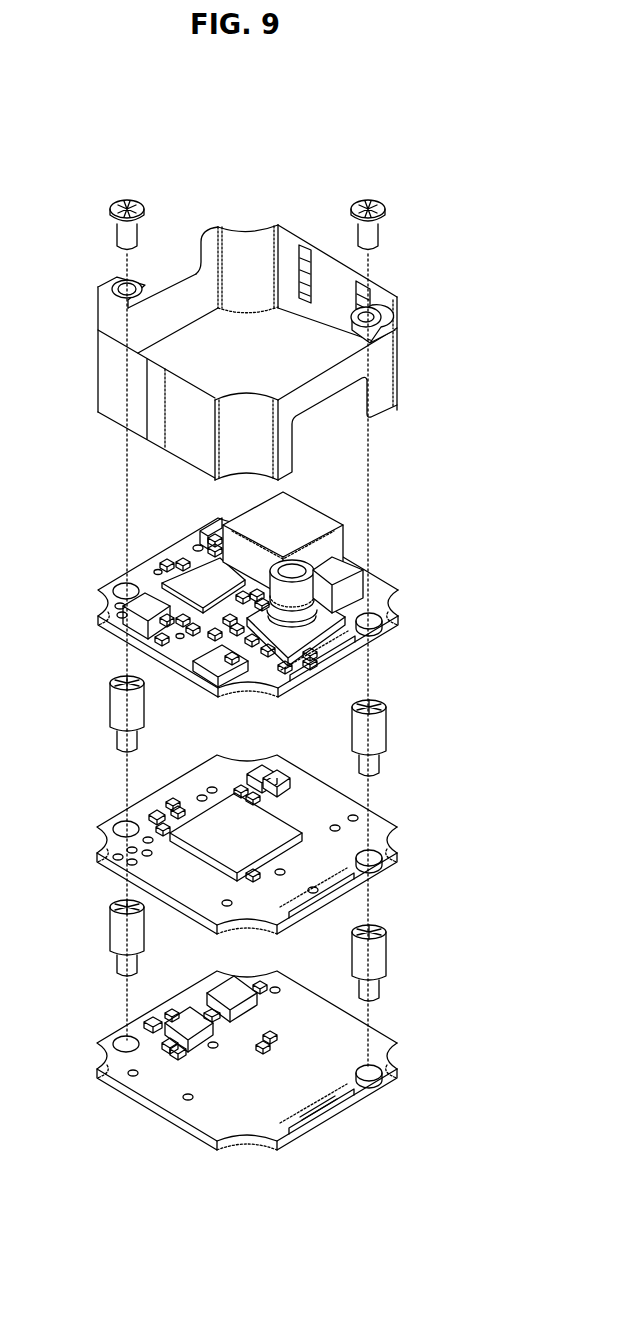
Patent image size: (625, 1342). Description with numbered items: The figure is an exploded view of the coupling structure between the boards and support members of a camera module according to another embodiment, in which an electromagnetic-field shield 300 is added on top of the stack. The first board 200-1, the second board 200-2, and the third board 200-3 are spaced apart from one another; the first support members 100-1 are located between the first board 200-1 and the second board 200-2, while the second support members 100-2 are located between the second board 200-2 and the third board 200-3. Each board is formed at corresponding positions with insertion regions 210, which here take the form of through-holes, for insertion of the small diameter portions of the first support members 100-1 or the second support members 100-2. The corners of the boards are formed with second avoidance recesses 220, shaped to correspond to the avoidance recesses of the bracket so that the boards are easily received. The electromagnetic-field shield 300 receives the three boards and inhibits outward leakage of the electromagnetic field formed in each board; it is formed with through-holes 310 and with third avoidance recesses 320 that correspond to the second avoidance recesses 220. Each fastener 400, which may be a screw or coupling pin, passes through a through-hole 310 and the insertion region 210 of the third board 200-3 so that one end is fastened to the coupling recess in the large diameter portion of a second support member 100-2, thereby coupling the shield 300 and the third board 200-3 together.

The fastener 400 is at (122, 198).
The through-hole 310 is at (113, 279).
The electromagnetic-field shield 300 is at (263, 352).
The third avoidance recess 320 is at (255, 445).
The third board 200-3 is at (386, 583).
The second board 200-2 is at (386, 818).
The first board 200-1 is at (384, 1038).
The insertion region 210 is at (115, 587).
The second avoidance recess 220 is at (405, 611).
The second support member 100-2 is at (118, 712).
The first support member 100-1 is at (118, 935).